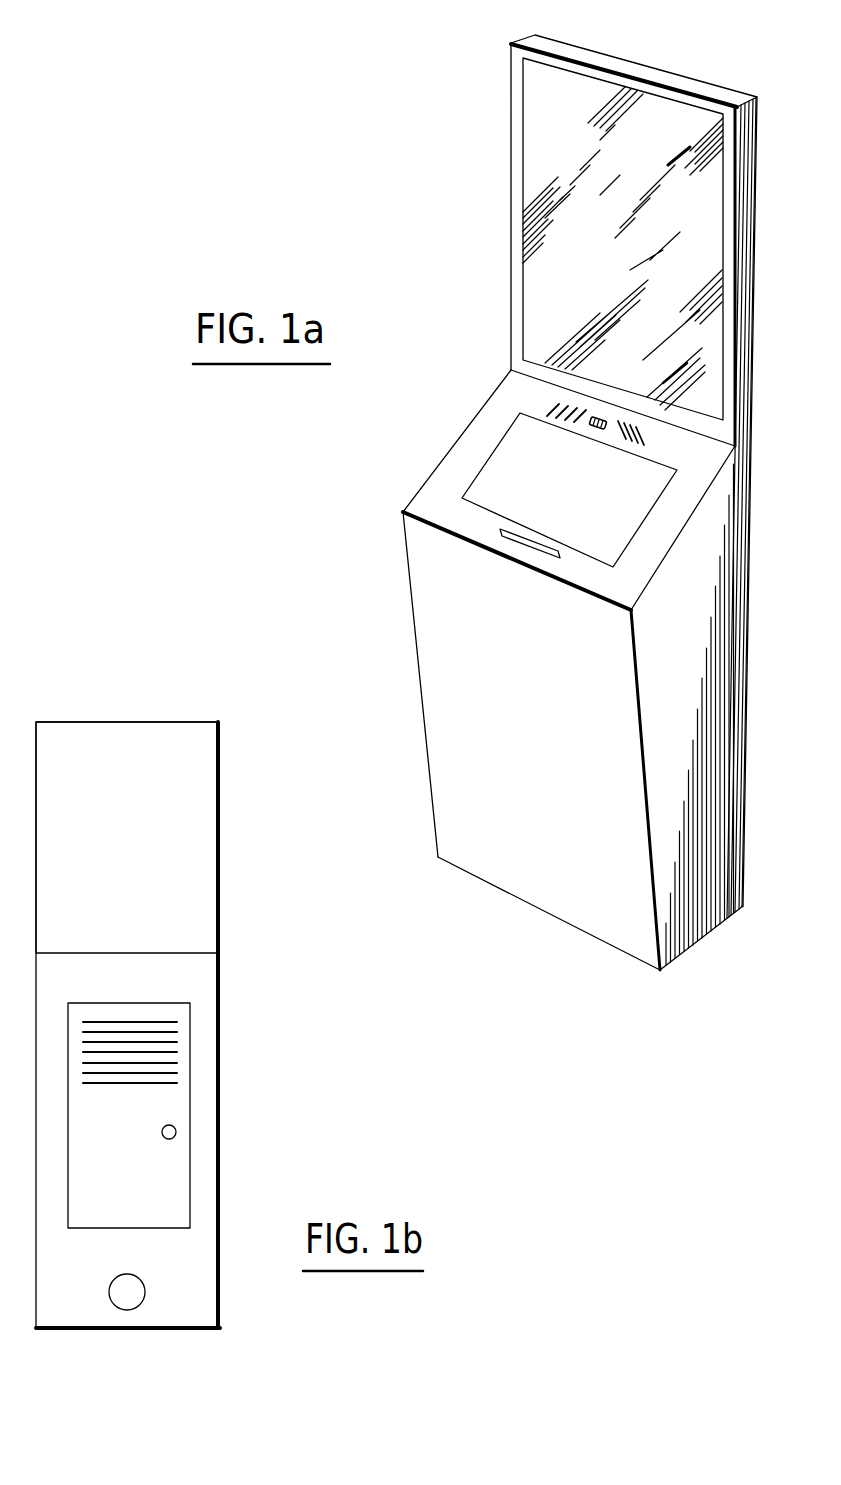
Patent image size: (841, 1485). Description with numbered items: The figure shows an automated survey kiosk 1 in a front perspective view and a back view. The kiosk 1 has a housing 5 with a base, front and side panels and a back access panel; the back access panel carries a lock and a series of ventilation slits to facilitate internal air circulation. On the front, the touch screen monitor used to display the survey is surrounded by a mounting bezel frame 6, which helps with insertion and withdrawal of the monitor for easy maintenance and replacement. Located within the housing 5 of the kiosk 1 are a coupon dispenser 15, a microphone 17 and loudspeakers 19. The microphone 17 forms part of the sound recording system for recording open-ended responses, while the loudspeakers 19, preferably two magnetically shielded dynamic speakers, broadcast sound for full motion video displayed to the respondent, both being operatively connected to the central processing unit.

In FIG. 1a, the automated survey kiosk 1 is at (445, 92).
In FIG. 1b, the automated survey kiosk 1 is at (238, 703).
In FIG. 1a, the housing 5 is at (511, 203).
In FIG. 1b, the housing 5 is at (221, 790).
In FIG. 1a, the mounting bezel frame 6 is at (508, 438).
In FIG. 1a, the coupon dispenser 15 is at (503, 533).
In FIG. 1a, the microphone 17 is at (597, 415).
In FIG. 1a, the loudspeakers 19 is at (553, 405).